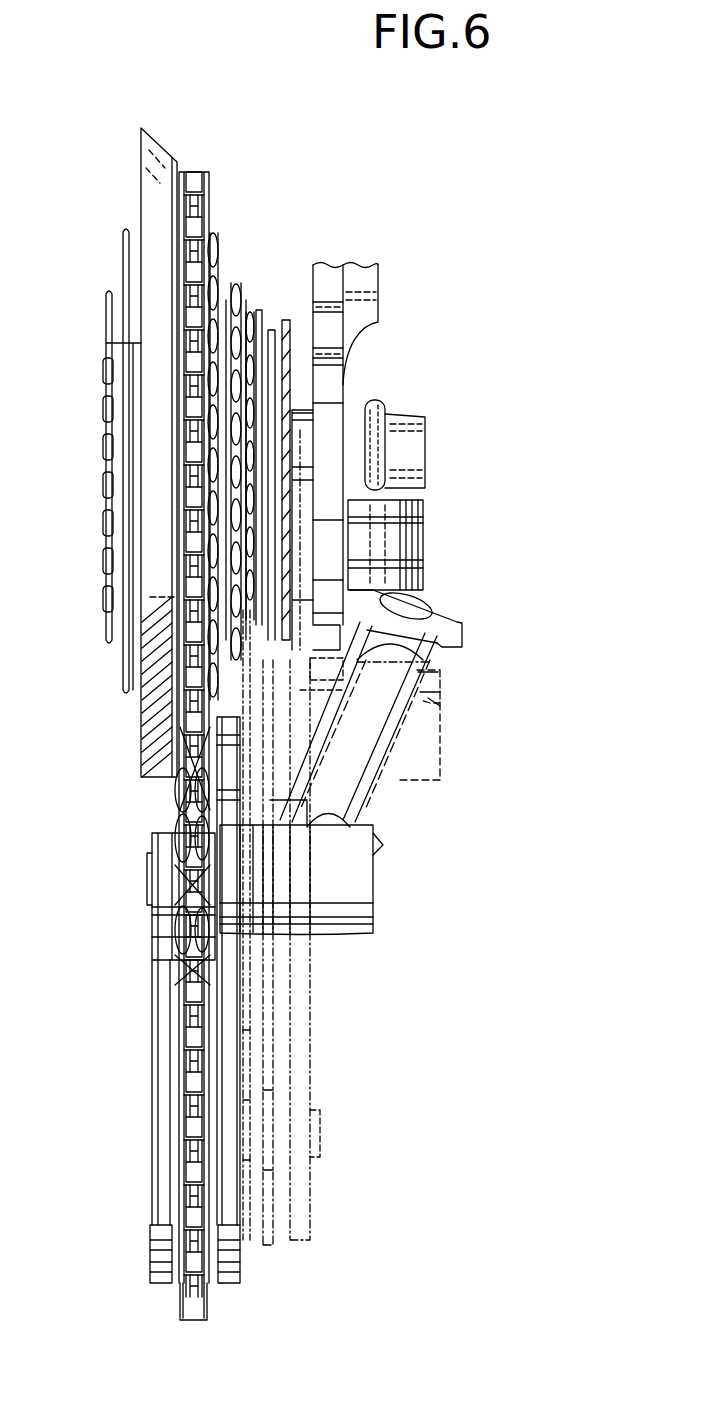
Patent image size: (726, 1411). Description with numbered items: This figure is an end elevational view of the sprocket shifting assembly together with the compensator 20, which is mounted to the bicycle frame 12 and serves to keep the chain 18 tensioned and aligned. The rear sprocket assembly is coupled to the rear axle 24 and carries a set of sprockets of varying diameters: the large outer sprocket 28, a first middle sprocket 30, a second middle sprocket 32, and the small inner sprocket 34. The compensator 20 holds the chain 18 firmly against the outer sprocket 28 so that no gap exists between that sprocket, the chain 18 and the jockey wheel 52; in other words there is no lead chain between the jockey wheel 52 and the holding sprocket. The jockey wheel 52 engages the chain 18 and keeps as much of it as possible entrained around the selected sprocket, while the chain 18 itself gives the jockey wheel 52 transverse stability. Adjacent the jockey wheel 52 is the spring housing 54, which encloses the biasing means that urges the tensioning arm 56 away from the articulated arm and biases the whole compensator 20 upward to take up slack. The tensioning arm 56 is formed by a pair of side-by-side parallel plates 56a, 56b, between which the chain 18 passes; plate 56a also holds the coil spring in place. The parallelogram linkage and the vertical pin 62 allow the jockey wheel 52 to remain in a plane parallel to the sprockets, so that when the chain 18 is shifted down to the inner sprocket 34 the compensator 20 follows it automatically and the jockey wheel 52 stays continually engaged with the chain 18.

The bicycle frame 12 is at (364, 348).
The chain 18 is at (178, 777).
The compensator 20 is at (404, 797).
The rear axle 24 is at (432, 452).
The outer sprocket 28 is at (192, 172).
The first middle sprocket 30 is at (218, 252).
The second middle sprocket 32 is at (240, 295).
The inner sprocket 34 is at (258, 322).
The jockey wheel 52 is at (183, 892).
The spring housing 54 is at (353, 886).
The tensioning arm 56 is at (138, 1160).
The plate 56a is at (228, 1287).
The plate 56b is at (162, 1286).
The vertical pin 62 is at (422, 536).